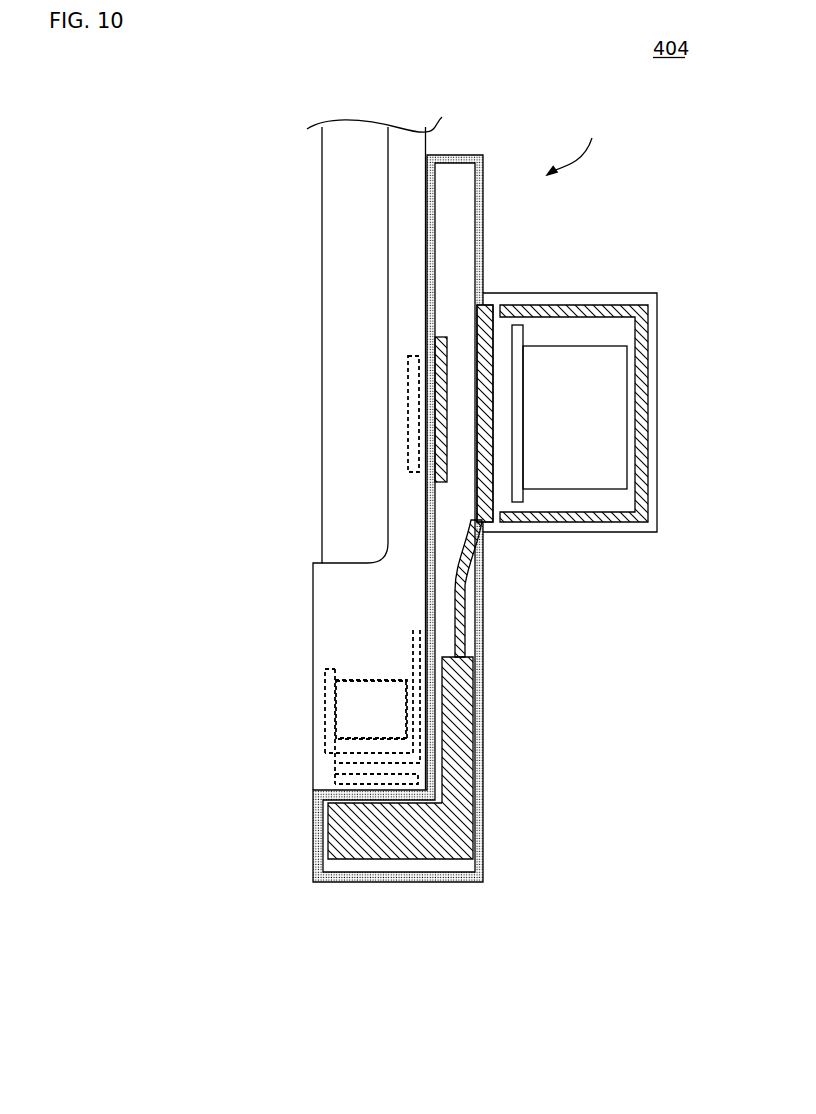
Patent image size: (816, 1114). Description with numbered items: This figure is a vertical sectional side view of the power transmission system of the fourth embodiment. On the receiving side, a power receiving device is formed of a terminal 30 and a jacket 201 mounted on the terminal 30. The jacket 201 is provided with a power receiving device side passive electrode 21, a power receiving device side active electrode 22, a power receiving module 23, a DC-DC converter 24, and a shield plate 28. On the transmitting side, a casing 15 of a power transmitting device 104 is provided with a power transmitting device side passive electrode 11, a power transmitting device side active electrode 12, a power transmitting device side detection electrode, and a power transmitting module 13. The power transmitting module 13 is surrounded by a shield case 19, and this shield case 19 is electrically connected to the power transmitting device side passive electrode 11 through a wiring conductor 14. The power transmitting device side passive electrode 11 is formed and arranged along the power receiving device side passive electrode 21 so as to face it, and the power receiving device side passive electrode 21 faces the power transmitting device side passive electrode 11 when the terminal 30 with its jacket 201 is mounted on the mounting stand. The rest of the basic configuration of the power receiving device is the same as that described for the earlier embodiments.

The power transmitting device 104 is at (581, 143).
The jacket 201 is at (398, 146).
The terminal 30 is at (319, 239).
The casing 15 is at (483, 155).
The power receiving device side active electrode 22 is at (407, 393).
The power transmitting device side active electrode 12 is at (447, 337).
The shield case 19 is at (647, 485).
The power transmitting module 13 is at (608, 407).
The wiring conductor 14 is at (462, 636).
The shield plate 28 is at (417, 717).
The power transmitting device side passive electrode 11 is at (373, 843).
The power receiving module 23 is at (350, 713).
The DC-DC converter 24 is at (371, 709).
The power receiving device side passive electrode 21 is at (337, 782).